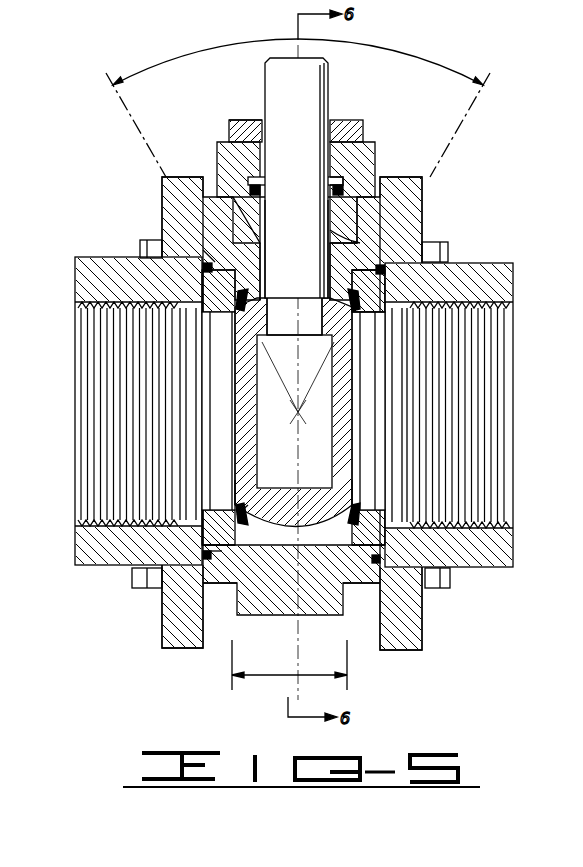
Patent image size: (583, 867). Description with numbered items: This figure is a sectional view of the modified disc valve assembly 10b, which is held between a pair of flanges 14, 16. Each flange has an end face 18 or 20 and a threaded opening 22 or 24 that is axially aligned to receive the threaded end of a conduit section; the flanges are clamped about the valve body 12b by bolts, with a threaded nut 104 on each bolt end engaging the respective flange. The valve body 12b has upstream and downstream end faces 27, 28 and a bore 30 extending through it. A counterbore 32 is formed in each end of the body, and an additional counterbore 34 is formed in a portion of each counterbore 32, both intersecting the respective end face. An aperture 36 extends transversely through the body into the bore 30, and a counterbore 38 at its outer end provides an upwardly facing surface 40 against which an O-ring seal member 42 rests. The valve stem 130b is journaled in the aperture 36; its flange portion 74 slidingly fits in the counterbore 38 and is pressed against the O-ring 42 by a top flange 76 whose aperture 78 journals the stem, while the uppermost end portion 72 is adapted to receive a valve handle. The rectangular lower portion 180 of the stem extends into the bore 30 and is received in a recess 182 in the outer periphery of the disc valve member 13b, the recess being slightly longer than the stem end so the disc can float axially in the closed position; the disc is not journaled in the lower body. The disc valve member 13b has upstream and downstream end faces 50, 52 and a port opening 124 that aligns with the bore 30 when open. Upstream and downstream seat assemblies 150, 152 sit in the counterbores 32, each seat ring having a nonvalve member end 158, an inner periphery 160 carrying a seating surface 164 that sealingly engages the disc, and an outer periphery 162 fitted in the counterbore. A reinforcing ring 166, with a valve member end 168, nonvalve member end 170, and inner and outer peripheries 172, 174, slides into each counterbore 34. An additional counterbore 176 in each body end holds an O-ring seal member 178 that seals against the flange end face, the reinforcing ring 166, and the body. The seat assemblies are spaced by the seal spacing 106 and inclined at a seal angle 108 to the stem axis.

The disc valve assembly 10b is at (362, 107).
The valve body 12b is at (288, 606).
The disc valve member 13b is at (378, 372).
The flange 14 is at (175, 640).
The flange 16 is at (398, 645).
The end face 18 is at (212, 578).
The end face 20 is at (375, 577).
The threaded opening 22 is at (82, 322).
The threaded opening 24 is at (490, 510).
The upstream end face 27 is at (198, 572).
The downstream end face 28 is at (384, 574).
The bore 30 is at (298, 527).
The counterbore 32 is at (240, 490).
The counterbore 34 is at (210, 548).
The aperture 36 is at (262, 213).
The counterbore 38 is at (255, 165).
The upwardly facing surface 40 is at (352, 210).
The O-ring seal member 42 is at (263, 178).
The upstream end face 50 is at (200, 380).
The downstream end face 52 is at (386, 388).
The uppermost end portion 72 is at (318, 78).
The flange portion 74 is at (322, 170).
The top flange 76 is at (256, 120).
The aperture 78 is at (262, 150).
The threaded nut 104 is at (140, 248).
The seal spacing 106 is at (292, 677).
The seal angle 108 is at (224, 46).
The port opening 124 is at (258, 418).
The valve stem 130b is at (370, 225).
The upstream seat assembly 150 is at (205, 330).
The downstream seat assembly 152 is at (385, 320).
The nonvalve member end 158 is at (203, 290).
The inner periphery 160 is at (380, 352).
The outer periphery 162 is at (343, 548).
The seating surface 164 is at (350, 512).
The reinforcing ring 166 is at (230, 512).
The valve member end 168 is at (238, 518).
The nonvalve member end 170 is at (202, 528).
The inner periphery 172 is at (225, 500).
The outer periphery 174 is at (200, 554).
The counterbore 176 is at (203, 268).
The O-ring seal member 178 is at (205, 262).
The lower portion 180 is at (268, 340).
The recess 182 is at (310, 330).